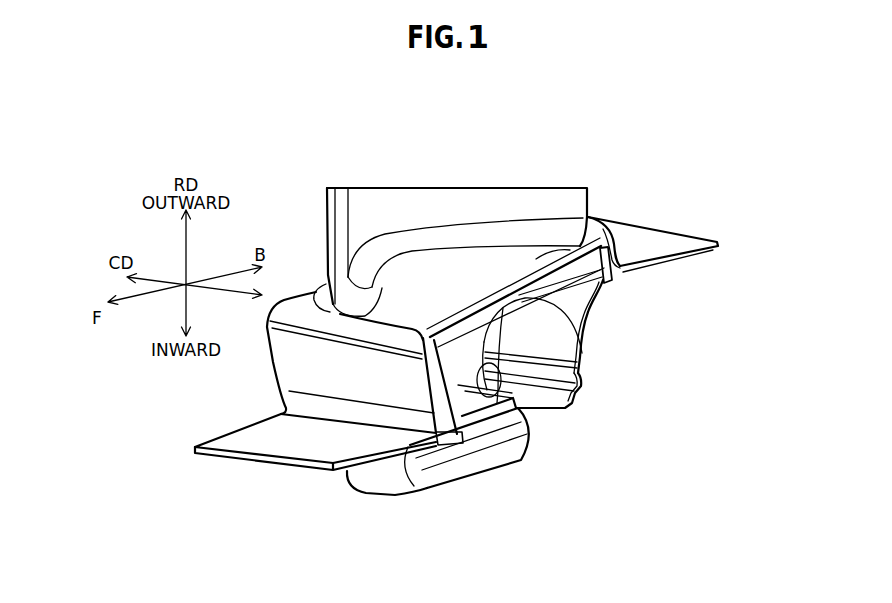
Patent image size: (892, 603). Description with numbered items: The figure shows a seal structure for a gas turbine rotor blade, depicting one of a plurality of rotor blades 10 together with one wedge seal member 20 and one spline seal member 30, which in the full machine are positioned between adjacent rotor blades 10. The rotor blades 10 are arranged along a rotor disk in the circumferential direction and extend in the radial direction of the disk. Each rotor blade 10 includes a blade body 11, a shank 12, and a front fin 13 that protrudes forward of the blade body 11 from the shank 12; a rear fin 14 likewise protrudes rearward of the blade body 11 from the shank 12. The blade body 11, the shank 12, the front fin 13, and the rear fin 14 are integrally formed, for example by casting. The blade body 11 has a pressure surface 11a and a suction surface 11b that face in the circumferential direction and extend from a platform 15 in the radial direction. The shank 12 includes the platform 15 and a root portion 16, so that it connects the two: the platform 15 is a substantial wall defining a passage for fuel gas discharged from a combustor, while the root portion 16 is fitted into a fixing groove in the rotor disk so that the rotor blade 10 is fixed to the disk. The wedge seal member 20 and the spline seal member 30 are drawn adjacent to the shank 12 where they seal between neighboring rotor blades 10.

The rotor blade 10 is at (280, 182).
The blade body 11 is at (437, 188).
The pressure surface 11a is at (512, 203).
The suction surface 11b is at (352, 188).
The shank 12 is at (589, 326).
The front fin 13 is at (293, 440).
The rear fin 14 is at (664, 242).
The platform 15 is at (602, 266).
The root portion 16 is at (406, 482).
The wedge seal member 20 is at (584, 364).
The spline seal member 30 is at (478, 415).